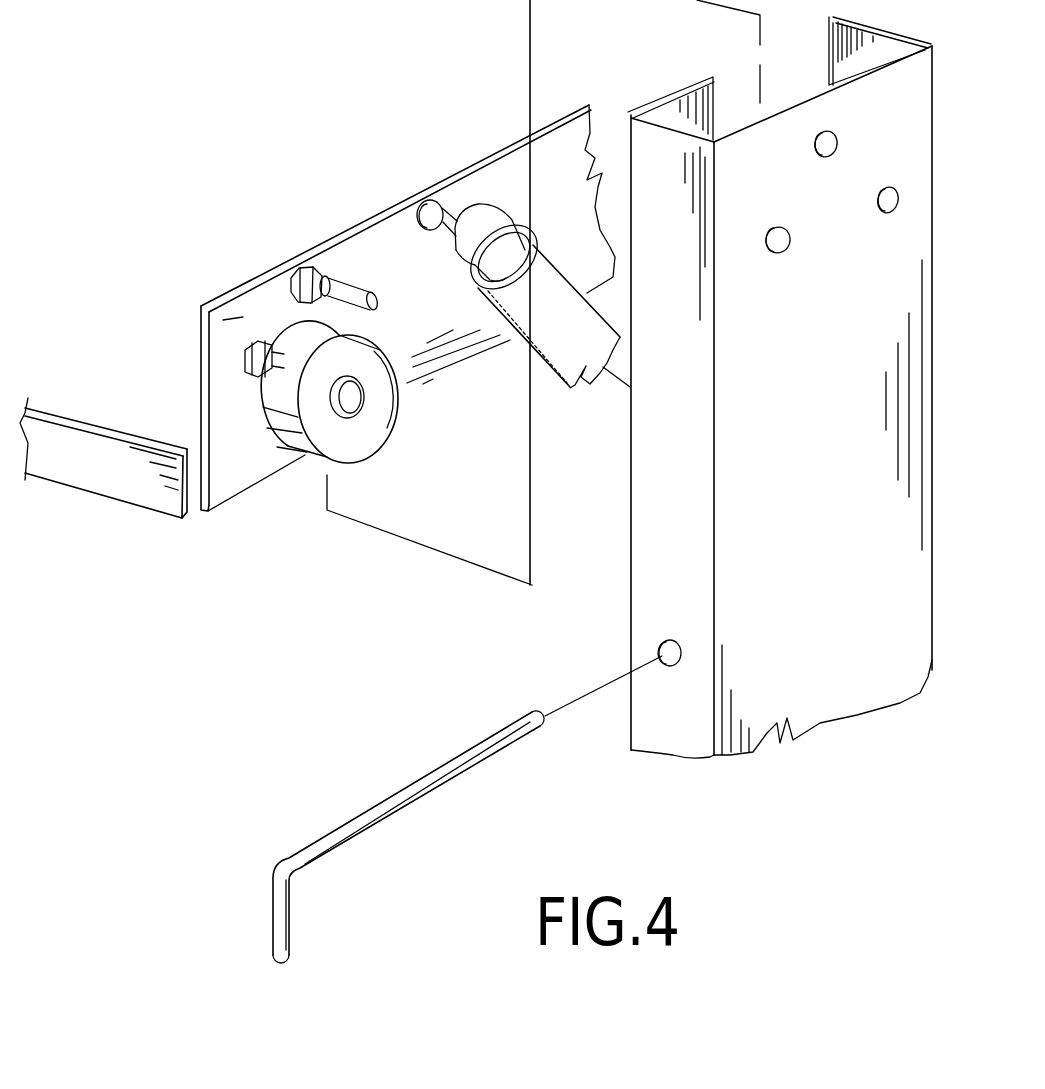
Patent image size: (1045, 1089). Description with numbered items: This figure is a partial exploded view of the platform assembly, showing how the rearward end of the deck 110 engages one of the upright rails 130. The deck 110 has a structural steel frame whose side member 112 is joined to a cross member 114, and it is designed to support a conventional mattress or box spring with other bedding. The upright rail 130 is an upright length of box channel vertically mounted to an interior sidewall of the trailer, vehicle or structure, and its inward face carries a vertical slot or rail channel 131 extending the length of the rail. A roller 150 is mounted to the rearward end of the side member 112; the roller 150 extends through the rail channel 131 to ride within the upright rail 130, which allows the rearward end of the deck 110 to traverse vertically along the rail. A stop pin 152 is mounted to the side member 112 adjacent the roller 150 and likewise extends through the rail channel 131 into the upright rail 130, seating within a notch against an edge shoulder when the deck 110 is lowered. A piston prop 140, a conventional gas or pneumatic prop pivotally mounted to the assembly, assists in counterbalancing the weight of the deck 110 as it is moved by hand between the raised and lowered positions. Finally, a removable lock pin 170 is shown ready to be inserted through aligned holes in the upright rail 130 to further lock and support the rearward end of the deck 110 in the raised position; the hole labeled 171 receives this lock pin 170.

The deck 110 is at (499, 313).
The side member 112 is at (490, 180).
The cross member 114 is at (95, 470).
The upright rail 130 is at (724, 420).
The rail channel 131 is at (813, 86).
The piston prop 140 is at (581, 334).
The roller 150 is at (307, 455).
The stop pin 152 is at (344, 285).
The lock pin 170 is at (395, 800).
The post hole 171 is at (660, 648).